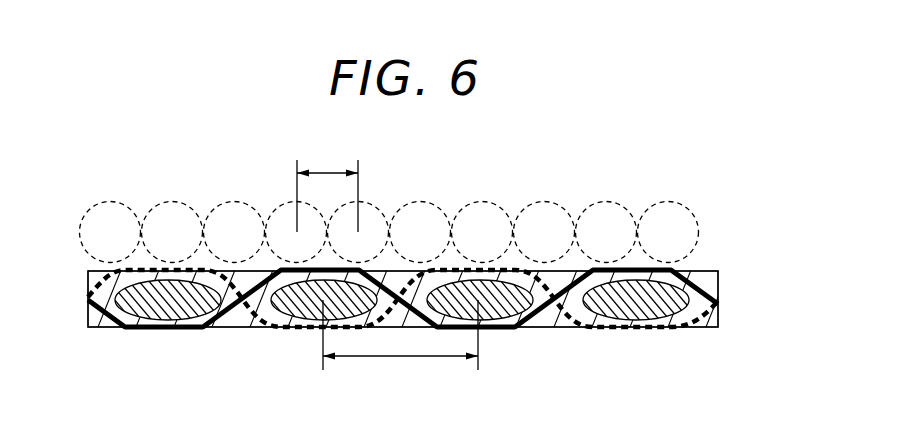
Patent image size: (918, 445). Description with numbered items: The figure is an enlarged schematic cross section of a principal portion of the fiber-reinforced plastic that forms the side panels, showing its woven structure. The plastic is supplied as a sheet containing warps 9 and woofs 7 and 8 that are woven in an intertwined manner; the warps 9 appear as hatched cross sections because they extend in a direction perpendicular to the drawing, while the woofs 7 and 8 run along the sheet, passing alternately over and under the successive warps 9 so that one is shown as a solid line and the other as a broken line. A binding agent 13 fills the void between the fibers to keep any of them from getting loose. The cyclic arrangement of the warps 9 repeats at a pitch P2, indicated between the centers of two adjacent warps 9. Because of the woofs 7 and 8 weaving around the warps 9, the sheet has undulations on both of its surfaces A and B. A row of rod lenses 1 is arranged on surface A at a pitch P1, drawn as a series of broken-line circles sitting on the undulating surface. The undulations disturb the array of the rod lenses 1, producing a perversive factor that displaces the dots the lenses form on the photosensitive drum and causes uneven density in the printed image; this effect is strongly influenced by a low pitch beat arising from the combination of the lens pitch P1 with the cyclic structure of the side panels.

The rod lenses 1 is at (103, 208).
The woof 7 is at (505, 328).
The woof 8 is at (618, 326).
The warps 9 is at (668, 312).
The binding agent 13 is at (707, 282).
The surface A is at (698, 277).
The surface B is at (708, 326).
The pitch of the cyclic arrangement of the rod lenses P1 is at (327, 187).
The pitch of the cyclic arrangement of the warps P2 is at (400, 343).